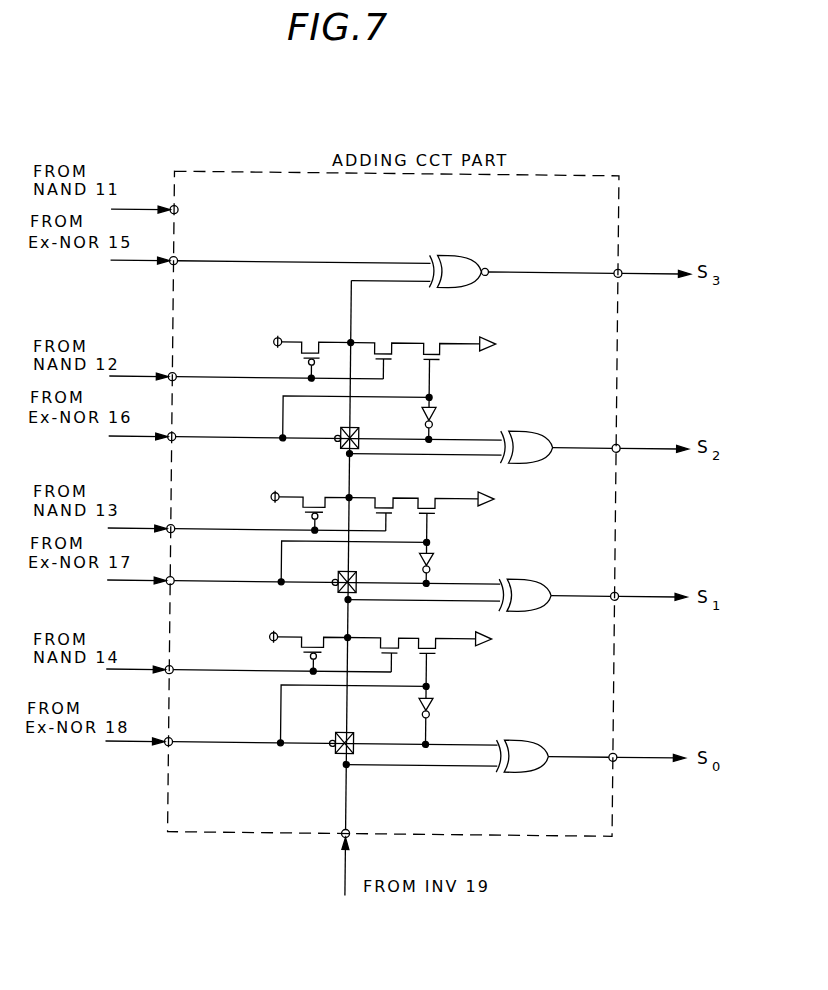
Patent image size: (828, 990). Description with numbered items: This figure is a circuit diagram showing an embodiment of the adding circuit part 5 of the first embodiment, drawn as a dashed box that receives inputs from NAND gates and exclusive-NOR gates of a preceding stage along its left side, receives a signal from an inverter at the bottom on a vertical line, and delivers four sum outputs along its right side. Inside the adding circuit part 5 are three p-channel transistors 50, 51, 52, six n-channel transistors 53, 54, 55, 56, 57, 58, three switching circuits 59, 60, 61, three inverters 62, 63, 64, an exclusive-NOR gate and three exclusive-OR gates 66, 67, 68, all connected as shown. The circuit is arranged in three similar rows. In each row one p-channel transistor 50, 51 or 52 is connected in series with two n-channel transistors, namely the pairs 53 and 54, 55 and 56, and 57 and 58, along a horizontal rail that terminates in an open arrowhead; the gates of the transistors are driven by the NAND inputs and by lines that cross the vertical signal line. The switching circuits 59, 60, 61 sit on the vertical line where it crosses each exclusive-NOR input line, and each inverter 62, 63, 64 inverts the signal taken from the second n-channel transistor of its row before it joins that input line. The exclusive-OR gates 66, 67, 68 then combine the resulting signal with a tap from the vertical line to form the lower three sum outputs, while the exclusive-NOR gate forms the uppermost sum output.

The adding circuit part 5 is at (577, 174).
The p-channel transistor 50 is at (306, 349).
The p-channel transistor 51 is at (312, 502).
The p-channel transistor 52 is at (309, 642).
The n-channel transistor 53 is at (379, 348).
The n-channel transistor 54 is at (429, 362).
The n-channel transistor 55 is at (462, 256).
The n-channel transistor 56 is at (427, 512).
The n-channel transistor 57 is at (385, 642).
The n-channel transistor 58 is at (426, 655).
The switching circuit 59 is at (359, 431).
The switching circuit 60 is at (357, 578).
The switching circuit 61 is at (359, 735).
The inverter 62 is at (436, 415).
The inverter 63 is at (434, 564).
The inverter 64 is at (434, 708).
The exclusive-OR gate 66 is at (527, 430).
The exclusive-OR gate 67 is at (522, 579).
The exclusive-OR gate 68 is at (522, 740).